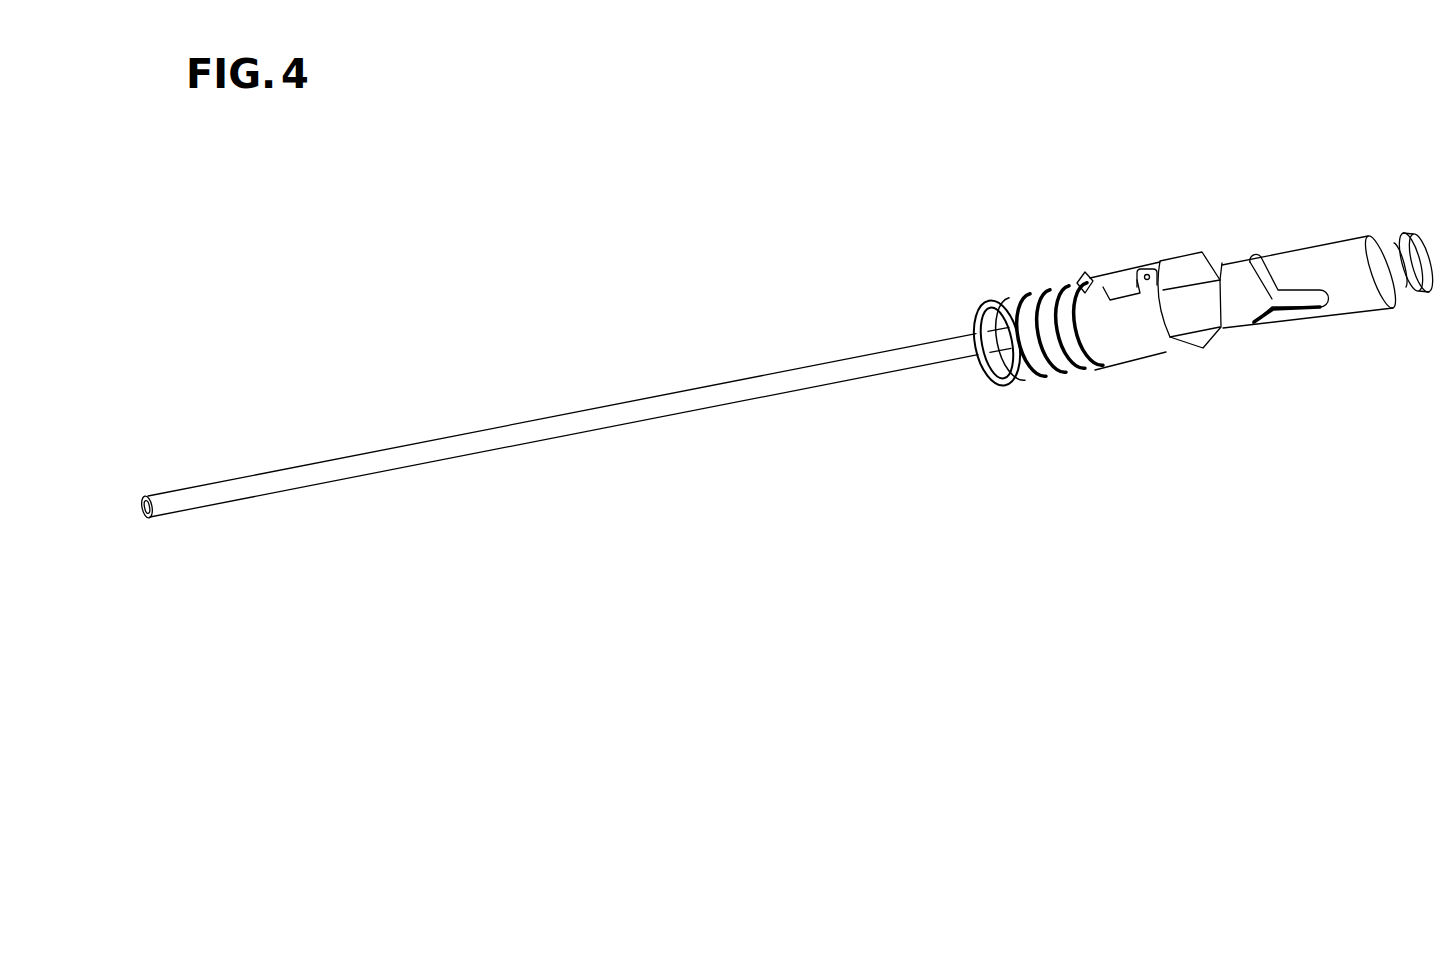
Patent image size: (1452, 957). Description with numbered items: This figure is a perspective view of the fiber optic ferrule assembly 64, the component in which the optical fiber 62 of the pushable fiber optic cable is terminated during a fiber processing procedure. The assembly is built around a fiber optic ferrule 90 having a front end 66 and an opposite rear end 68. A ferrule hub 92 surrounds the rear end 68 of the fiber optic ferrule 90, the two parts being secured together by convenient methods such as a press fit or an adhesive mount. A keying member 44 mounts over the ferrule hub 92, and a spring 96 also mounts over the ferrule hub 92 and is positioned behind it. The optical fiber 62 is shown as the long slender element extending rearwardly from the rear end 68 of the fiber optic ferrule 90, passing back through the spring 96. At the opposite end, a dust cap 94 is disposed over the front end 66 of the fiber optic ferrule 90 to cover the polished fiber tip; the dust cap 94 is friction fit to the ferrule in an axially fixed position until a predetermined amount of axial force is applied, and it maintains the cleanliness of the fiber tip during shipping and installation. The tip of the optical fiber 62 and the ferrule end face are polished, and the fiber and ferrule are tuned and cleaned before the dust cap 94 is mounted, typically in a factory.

The optical fiber 62 is at (609, 438).
The fiber optic ferrule assembly 64 is at (1133, 233).
The keying member 44 is at (1118, 290).
The ferrule hub 92 is at (1183, 275).
The rear end 68 is at (1233, 356).
The dust cap 94 is at (1303, 262).
The fiber optic ferrule 90 is at (1227, 277).
The front end 66 is at (1388, 328).
The spring 96 is at (979, 300).